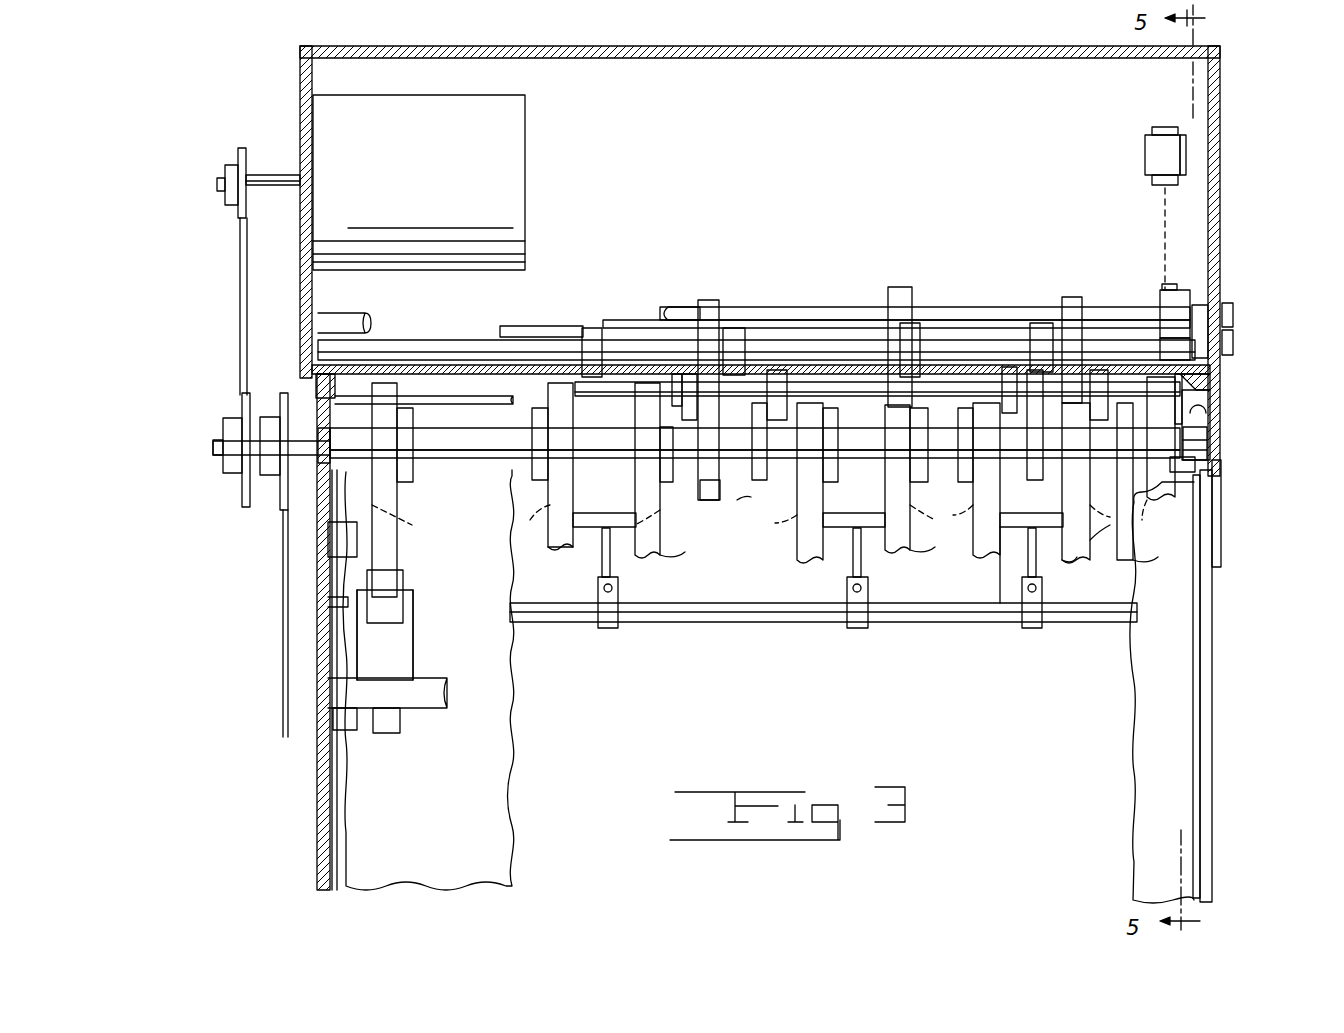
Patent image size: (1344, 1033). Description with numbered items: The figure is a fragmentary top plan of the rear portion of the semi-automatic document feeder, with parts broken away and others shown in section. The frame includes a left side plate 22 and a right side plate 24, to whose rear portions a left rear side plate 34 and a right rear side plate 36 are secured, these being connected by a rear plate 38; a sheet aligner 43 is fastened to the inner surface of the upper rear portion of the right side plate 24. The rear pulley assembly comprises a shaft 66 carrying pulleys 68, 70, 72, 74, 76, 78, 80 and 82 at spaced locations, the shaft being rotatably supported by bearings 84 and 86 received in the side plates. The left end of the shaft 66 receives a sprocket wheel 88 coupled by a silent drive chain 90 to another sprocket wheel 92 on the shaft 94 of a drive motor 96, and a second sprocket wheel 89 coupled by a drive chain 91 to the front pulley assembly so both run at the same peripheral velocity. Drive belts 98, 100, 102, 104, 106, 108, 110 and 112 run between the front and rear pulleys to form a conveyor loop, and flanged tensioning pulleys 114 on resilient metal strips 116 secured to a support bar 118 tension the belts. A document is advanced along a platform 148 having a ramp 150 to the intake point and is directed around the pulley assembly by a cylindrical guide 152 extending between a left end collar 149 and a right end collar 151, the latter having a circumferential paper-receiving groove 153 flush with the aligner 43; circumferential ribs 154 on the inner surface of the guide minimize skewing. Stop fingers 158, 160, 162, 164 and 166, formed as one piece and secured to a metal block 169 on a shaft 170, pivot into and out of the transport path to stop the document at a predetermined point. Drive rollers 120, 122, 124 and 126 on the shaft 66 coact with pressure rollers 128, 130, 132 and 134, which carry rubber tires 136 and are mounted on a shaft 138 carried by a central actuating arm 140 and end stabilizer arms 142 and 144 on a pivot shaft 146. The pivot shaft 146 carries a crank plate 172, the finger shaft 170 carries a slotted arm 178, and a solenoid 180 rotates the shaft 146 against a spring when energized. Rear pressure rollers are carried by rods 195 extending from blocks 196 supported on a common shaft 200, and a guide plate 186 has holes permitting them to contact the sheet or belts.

The left side plate 22 is at (332, 834).
The right side plate 24 is at (1213, 705).
The left rear side plate 34 is at (300, 72).
The right rear side plate 36 is at (1222, 186).
The rear plate 38 is at (906, 57).
The sheet aligner 43 is at (1185, 780).
The shaft 66 is at (484, 458).
The pulley 68 is at (1160, 462).
The pulley 70 is at (1091, 483).
The pulley 72 is at (970, 480).
The pulley 74 is at (916, 489).
The pulley 76 is at (793, 483).
The pulley 78 is at (670, 470).
The pulley 80 is at (545, 466).
The pulley 82 is at (408, 521).
The bearing 84 is at (340, 458).
The bearing 86 is at (1222, 408).
The sprocket wheel 88 is at (240, 475).
The second sprocket wheel 89 is at (268, 478).
The silent drive chain 90 is at (240, 320).
The drive chain 91 is at (283, 659).
The sprocket wheel 92 is at (228, 205).
The shaft 94 is at (270, 175).
The drive motor 96 is at (527, 164).
The drive belt 98 is at (1222, 440).
The drive belt 100 is at (1133, 560).
The drive belt 102 is at (975, 625).
The drive belt 104 is at (910, 550).
The drive belt 106 is at (800, 600).
The drive belt 108 is at (660, 555).
The drive belt 110 is at (560, 560).
The drive belt 112 is at (390, 575).
The flanged tensioning pulley 114 is at (365, 580).
The resilient metal strip 116 is at (403, 660).
The support bar 118 is at (420, 715).
The drive roller 120 is at (1108, 541).
The drive roller 122 is at (1090, 560).
The drive roller 124 is at (745, 513).
The drive roller 126 is at (700, 492).
The pressure roller 128 is at (1088, 355).
The pressure roller 130 is at (1000, 365).
The pressure roller 132 is at (775, 372).
The pressure roller 134 is at (672, 393).
The rubber tire 136 is at (629, 383).
The shaft 138 is at (852, 392).
The central actuating arm 140 is at (900, 287).
The end stabilizer arm 142 is at (712, 300).
The end stabilizer arm 144 is at (1071, 297).
The shaft 146 is at (675, 305).
The platform 148 is at (1145, 762).
The left end collar 149 is at (312, 385).
The ramp 150 is at (1222, 470).
The right end collar 151 is at (1222, 388).
The cylindrical guide 152 is at (368, 343).
The circumferential paper-receiving groove 153 is at (1225, 345).
The circumferential rib 154 is at (452, 383).
The finger 158 is at (1128, 340).
The finger 160 is at (1037, 323).
The finger 162 is at (912, 345).
The finger 164 is at (740, 340).
The finger 166 is at (594, 320).
The metal block 169 is at (482, 315).
The shaft 170 is at (392, 350).
The crank plate 172 is at (1222, 278).
The arm 178 is at (1222, 372).
The solenoid 180 is at (1186, 148).
The guide plate 186 is at (330, 856).
The rod 195 is at (620, 582).
The block 196 is at (606, 630).
The common shaft 200 is at (742, 625).